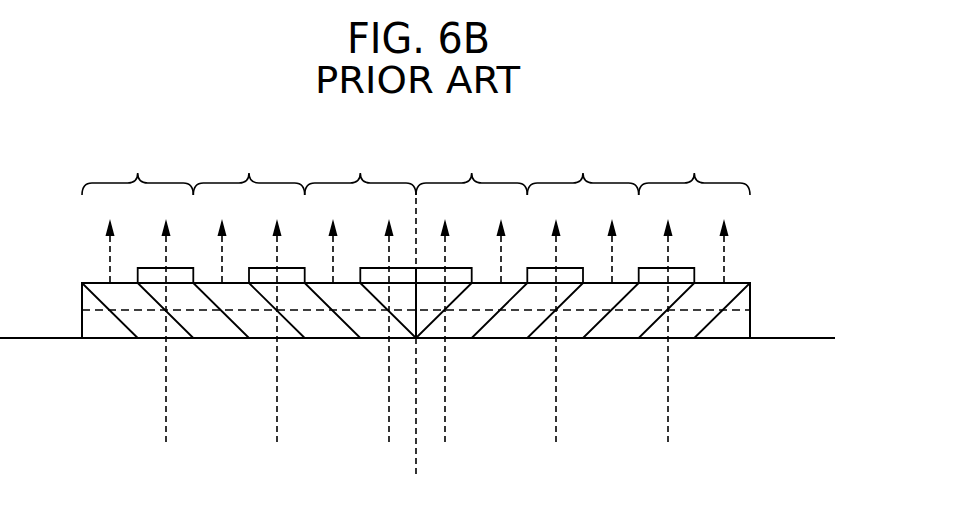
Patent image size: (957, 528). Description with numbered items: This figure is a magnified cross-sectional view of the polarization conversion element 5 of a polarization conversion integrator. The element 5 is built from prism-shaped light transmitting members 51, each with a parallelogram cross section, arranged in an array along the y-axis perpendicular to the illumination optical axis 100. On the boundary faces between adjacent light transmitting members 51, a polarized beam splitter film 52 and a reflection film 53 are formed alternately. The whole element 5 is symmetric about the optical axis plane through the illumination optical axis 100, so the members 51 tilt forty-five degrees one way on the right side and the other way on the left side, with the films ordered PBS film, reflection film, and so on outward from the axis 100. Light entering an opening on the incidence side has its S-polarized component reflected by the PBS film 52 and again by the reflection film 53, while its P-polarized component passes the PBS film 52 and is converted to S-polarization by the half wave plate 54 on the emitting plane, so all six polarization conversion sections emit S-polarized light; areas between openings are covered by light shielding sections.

The polarization conversion element 5 is at (752, 142).
The light transmitting member 51 is at (738, 283).
The PBS film 52 is at (685, 300).
The reflection film 53 is at (751, 286).
The half wave plate 54 is at (692, 268).
The illumination optical axis 100 is at (506, 342).